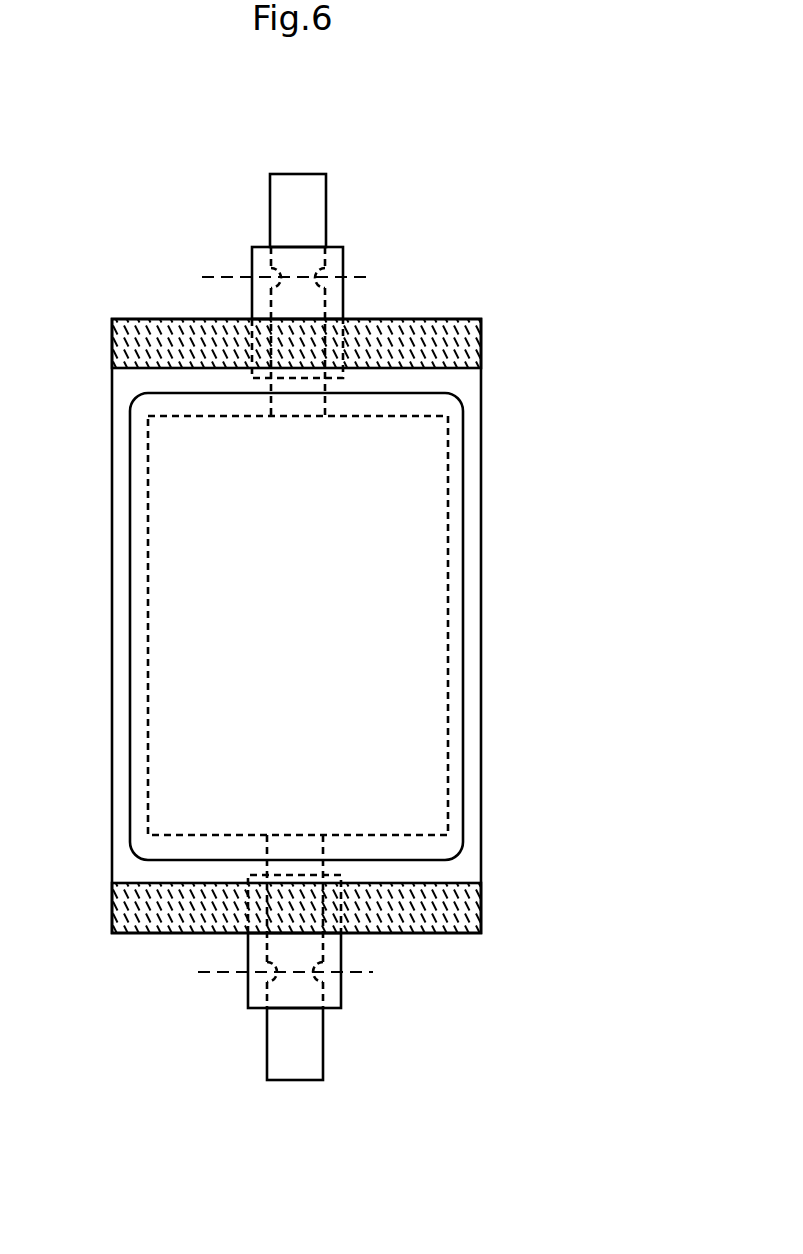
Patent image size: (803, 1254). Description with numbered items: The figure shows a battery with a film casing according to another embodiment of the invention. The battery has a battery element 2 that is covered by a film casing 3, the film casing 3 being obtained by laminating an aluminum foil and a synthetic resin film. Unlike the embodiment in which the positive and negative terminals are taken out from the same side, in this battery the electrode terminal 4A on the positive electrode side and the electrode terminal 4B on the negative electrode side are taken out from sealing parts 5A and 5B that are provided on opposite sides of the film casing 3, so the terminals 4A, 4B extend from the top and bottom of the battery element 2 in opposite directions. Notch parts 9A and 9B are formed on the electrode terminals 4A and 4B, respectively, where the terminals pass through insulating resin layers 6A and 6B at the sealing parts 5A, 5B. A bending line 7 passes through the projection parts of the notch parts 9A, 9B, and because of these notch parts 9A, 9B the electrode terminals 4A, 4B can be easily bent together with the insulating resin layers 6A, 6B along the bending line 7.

The battery element 2 is at (185, 603).
The film casing 3 is at (473, 592).
The electrode terminal on the positive electrode side 4A is at (285, 200).
The electrode terminal on the negative electrode side 4B is at (313, 1067).
The sealing part 5A is at (463, 345).
The sealing part 5B is at (467, 913).
The insulating resin layer 6A is at (333, 267).
The insulating resin layer 6B is at (333, 993).
The bending line 7 is at (215, 266).
The notch part 9A is at (280, 284).
The notch part 9B is at (268, 968).